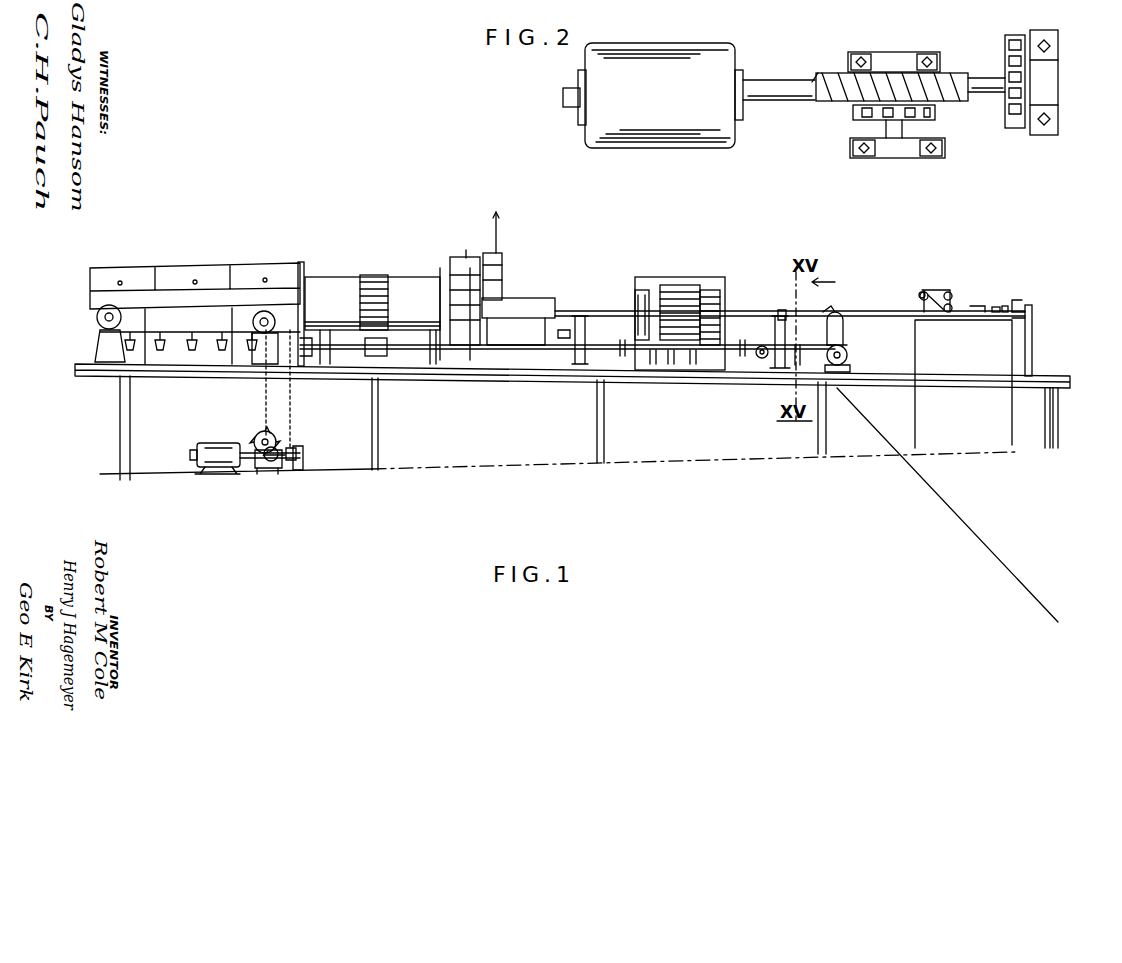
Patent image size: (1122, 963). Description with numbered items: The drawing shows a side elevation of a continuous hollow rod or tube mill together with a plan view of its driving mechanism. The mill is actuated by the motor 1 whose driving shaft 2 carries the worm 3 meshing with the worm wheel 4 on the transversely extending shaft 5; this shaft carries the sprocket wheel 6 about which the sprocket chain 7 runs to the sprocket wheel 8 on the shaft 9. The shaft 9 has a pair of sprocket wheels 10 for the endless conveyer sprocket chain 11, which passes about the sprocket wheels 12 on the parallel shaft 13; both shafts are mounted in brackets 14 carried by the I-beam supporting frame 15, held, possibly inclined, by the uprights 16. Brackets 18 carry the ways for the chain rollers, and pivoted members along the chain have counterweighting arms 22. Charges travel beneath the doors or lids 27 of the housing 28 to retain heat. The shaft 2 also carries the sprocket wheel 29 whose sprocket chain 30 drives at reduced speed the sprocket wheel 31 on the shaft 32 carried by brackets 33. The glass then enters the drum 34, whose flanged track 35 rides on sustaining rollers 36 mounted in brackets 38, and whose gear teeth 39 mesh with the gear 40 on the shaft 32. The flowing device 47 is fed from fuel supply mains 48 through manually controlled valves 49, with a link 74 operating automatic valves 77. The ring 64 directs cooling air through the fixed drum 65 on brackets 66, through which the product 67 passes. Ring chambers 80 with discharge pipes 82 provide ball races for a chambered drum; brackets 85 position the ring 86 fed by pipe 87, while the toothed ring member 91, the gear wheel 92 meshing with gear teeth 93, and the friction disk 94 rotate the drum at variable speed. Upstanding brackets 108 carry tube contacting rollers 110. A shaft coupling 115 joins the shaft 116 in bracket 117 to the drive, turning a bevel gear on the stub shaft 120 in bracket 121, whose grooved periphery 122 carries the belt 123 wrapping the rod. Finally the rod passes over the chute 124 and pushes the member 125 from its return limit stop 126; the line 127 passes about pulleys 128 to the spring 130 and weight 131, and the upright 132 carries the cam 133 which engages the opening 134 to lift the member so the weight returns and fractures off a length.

In FIG. 2, the motor 1 is at (583, 150).
In FIG. 1, the motor 1 is at (200, 470).
In FIG. 2, the driving shaft 2 is at (562, 102).
In FIG. 1, the driving shaft 2 is at (250, 457).
In FIG. 1, the worm 3 is at (258, 467).
In FIG. 2, the worm wheel 4 is at (950, 72).
In FIG. 1, the worm wheel 4 is at (270, 449).
In FIG. 2, the transversely extending shaft 5 is at (898, 160).
In FIG. 1, the transversely extending shaft 5 is at (268, 470).
In FIG. 2, the sprocket wheel 6 is at (850, 112).
In FIG. 1, the sprocket wheel 6 is at (258, 474).
In FIG. 1, the sprocket chain 7 is at (470, 300).
In FIG. 1, the sprocket wheel 8 is at (284, 322).
In FIG. 1, the shaft 9 is at (270, 316).
In FIG. 1, the sprocket wheels 10 is at (255, 328).
In FIG. 1, the endless conveyer sprocket chain 11 is at (207, 333).
In FIG. 1, the sprocket wheels 12 is at (124, 315).
In FIG. 1, the shaft 13 is at (112, 313).
In FIG. 1, the brackets 14 is at (100, 348).
In FIG. 1, the I-beam supporting frame 15 is at (92, 374).
In FIG. 1, the uprights 16 is at (120, 428).
In FIG. 1, the brackets 18 is at (158, 333).
In FIG. 1, the counterweighting arms 22 is at (165, 350).
In FIG. 1, the doors or lids 27 is at (115, 270).
In FIG. 1, the housing 28 is at (90, 293).
In FIG. 2, the sprocket wheel 29 is at (1022, 128).
In FIG. 1, the sprocket wheel 29 is at (297, 462).
In FIG. 1, the sprocket chain 30 is at (304, 470).
In FIG. 1, the sprocket wheel 31 is at (303, 352).
In FIG. 1, the shaft 32 is at (336, 332).
In FIG. 1, the brackets 33 is at (600, 340).
In FIG. 1, the drum 34 is at (352, 330).
In FIG. 1, the flanged track 35 is at (303, 270).
In FIG. 1, the sustaining rollers 36 is at (326, 320).
In FIG. 1, the brackets 38 is at (372, 300).
In FIG. 1, the annular set of gear teeth 39 is at (470, 380).
In FIG. 1, the gear 40 is at (372, 348).
In FIG. 1, the flowing device 47 is at (462, 290).
In FIG. 1, the fuel supply mains 48 is at (488, 335).
In FIG. 1, the manually controlled valves 49 is at (482, 330).
In FIG. 1, the ring 64 is at (490, 270).
In FIG. 1, the fixed drum 65 is at (496, 282).
In FIG. 1, the brackets 66 is at (563, 380).
In FIG. 1, the product 67 is at (614, 310).
In FIG. 1, the link 74 is at (496, 290).
In FIG. 1, the valves 77 is at (498, 342).
In FIG. 1, the ring chambers 80 is at (702, 360).
In FIG. 1, the pipes 82 is at (690, 290).
In FIG. 1, the brackets 85 is at (522, 310).
In FIG. 1, the ring 86 is at (641, 290).
In FIG. 1, the pipe 87 is at (650, 360).
In FIG. 1, the ring member 91 is at (670, 352).
In FIG. 1, the gear wheel 92 is at (712, 355).
In FIG. 1, the gear teeth 93 is at (735, 355).
In FIG. 1, the friction disk 94 is at (692, 356).
In FIG. 1, the upstanding brackets 108 is at (566, 332).
In FIG. 1, the tube contacting rollers 110 is at (790, 318).
In FIG. 1, the shaft coupling 115 is at (763, 344).
In FIG. 1, the shaft 116 is at (817, 393).
In FIG. 1, the bracket 117 is at (953, 430).
In FIG. 1, the stub shaft 120 is at (848, 342).
In FIG. 1, the bracket 121 is at (850, 368).
In FIG. 1, the grooved periphery 122 is at (848, 355).
In FIG. 1, the belt 123 is at (846, 313).
In FIG. 1, the chute 124 is at (959, 517).
In FIG. 1, the member 125 is at (1032, 313).
In FIG. 1, the return limit stop 126 is at (996, 308).
In FIG. 1, the line 127 is at (975, 308).
In FIG. 1, the pulleys 128 is at (948, 290).
In FIG. 1, the spring 130 is at (920, 308).
In FIG. 1, the weight 131 is at (920, 310).
In FIG. 1, the upright 132 is at (1036, 345).
In FIG. 1, the cam 133 is at (1020, 303).
In FIG. 1, the opening 134 is at (1006, 308).